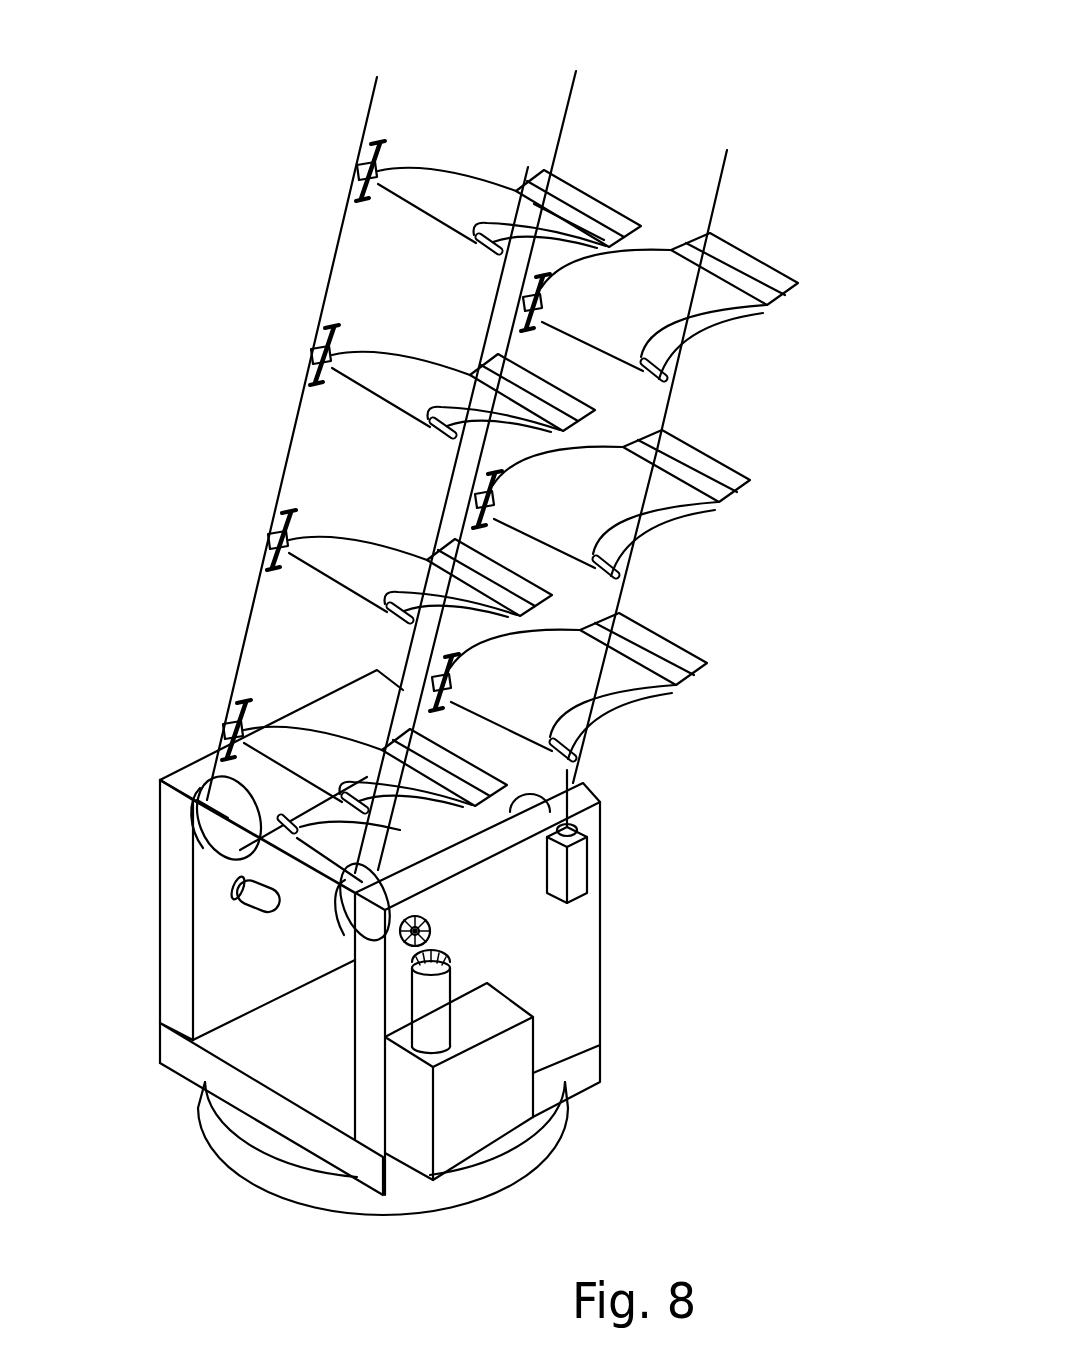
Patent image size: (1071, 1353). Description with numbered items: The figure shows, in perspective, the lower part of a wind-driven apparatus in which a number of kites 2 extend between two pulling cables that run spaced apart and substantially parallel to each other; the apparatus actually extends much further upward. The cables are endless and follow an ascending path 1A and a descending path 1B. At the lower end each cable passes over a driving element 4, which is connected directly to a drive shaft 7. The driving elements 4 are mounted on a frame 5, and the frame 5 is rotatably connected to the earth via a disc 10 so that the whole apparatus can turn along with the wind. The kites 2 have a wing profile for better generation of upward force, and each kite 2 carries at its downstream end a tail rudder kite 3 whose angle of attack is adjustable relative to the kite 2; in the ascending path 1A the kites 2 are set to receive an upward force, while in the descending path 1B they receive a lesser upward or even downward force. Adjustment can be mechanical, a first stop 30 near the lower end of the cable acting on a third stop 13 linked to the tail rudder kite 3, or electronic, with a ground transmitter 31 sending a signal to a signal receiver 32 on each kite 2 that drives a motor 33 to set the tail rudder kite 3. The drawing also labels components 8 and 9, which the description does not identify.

The ascending path 1A is at (445, 481).
The descending path 1B is at (660, 420).
The kite 2 is at (447, 121).
The tail rudder kite 3 is at (587, 208).
The driving element 4 is at (228, 818).
The frame 5 is at (593, 863).
The drive shaft 7 is at (433, 925).
The drive cylinder 8 is at (437, 1002).
The motor block 9 is at (493, 1103).
The disc 10 is at (523, 1157).
The third stop 13 is at (425, 427).
The first stop 30 is at (253, 903).
The transmitter 31 is at (577, 860).
The signal receiver 32 is at (590, 462).
The motor 33 is at (584, 516).